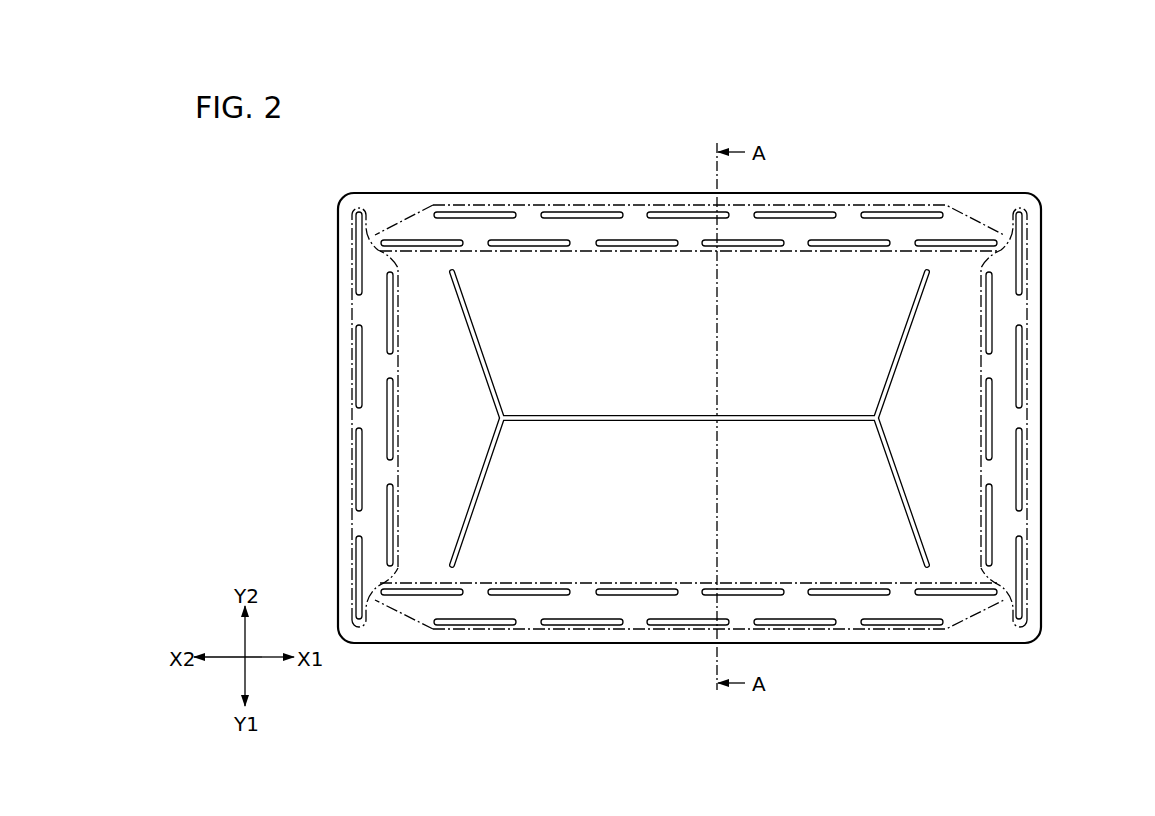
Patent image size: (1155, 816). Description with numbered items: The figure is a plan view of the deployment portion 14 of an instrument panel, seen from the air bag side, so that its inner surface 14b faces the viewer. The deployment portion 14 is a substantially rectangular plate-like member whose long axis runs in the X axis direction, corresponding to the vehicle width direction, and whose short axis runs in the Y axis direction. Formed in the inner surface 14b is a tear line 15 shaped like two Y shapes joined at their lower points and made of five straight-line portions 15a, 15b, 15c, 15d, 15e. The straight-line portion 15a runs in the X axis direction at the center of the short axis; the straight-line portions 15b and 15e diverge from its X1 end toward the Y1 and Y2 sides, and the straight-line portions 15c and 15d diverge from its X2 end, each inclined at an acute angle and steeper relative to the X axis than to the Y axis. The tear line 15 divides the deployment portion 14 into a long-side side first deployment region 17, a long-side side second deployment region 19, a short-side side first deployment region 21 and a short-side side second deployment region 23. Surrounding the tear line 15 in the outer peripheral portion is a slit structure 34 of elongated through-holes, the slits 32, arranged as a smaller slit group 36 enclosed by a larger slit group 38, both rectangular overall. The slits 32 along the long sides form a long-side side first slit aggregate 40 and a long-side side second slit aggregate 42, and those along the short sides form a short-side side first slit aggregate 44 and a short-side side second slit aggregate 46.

The deployment portion 14 is at (1037, 207).
The inner surface 14b is at (857, 285).
The tear line 15 is at (689, 418).
The straight-line portion 15a is at (750, 414).
The straight-line portion 15b is at (903, 498).
The straight-line portion 15c is at (476, 498).
The straight-line portion 15d is at (478, 340).
The straight-line portion 15e is at (902, 340).
The long-side side first deployment region 17 is at (589, 563).
The long-side side second deployment region 19 is at (817, 277).
The short-side side first deployment region 21 is at (938, 375).
The short-side side second deployment region 23 is at (432, 425).
The slit 32 is at (748, 589).
The slit structure 34 is at (1063, 415).
The slit group 36 is at (994, 404).
The slit group 38 is at (1024, 467).
The long-side side first slit aggregate 40 is at (689, 621).
The long-side side second slit aggregate 42 is at (689, 212).
The short-side side first slit aggregate 44 is at (1039, 417).
The short-side side second slit aggregate 46 is at (357, 417).